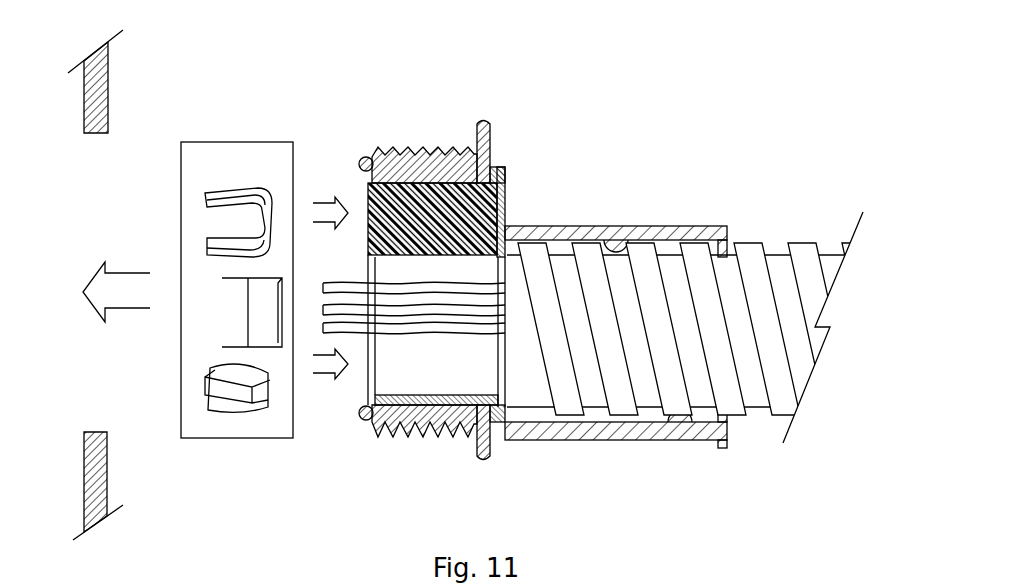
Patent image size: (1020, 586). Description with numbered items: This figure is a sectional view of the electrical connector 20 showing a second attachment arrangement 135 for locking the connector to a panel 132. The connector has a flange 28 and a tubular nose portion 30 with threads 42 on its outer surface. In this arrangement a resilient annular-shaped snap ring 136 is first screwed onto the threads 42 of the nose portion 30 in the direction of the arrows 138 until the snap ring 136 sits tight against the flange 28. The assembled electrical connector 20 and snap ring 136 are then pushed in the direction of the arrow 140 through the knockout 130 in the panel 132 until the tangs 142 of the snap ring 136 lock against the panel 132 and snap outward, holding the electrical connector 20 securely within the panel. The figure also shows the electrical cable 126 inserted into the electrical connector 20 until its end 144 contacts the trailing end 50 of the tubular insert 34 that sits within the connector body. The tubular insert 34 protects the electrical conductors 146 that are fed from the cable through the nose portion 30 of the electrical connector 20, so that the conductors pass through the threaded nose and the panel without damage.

The electrical connector 20 is at (454, 243).
The flange 28 is at (482, 123).
The tubular nose portion 30 is at (423, 256).
The tubular insert 34 is at (508, 172).
The threads 42 is at (425, 147).
The trailing end of tubular insert 50 is at (507, 198).
The electrical cable 126 is at (763, 422).
The knockout 130 is at (93, 412).
The panel 132 is at (92, 97).
The second attachment arrangement 135 is at (133, 190).
The snap ring 136 is at (233, 440).
The arrows 138 is at (325, 377).
The arrow 140 is at (132, 308).
The tangs 142 is at (225, 218).
The end of electrical cable 144 is at (507, 262).
The electrical conductors 146 is at (453, 328).